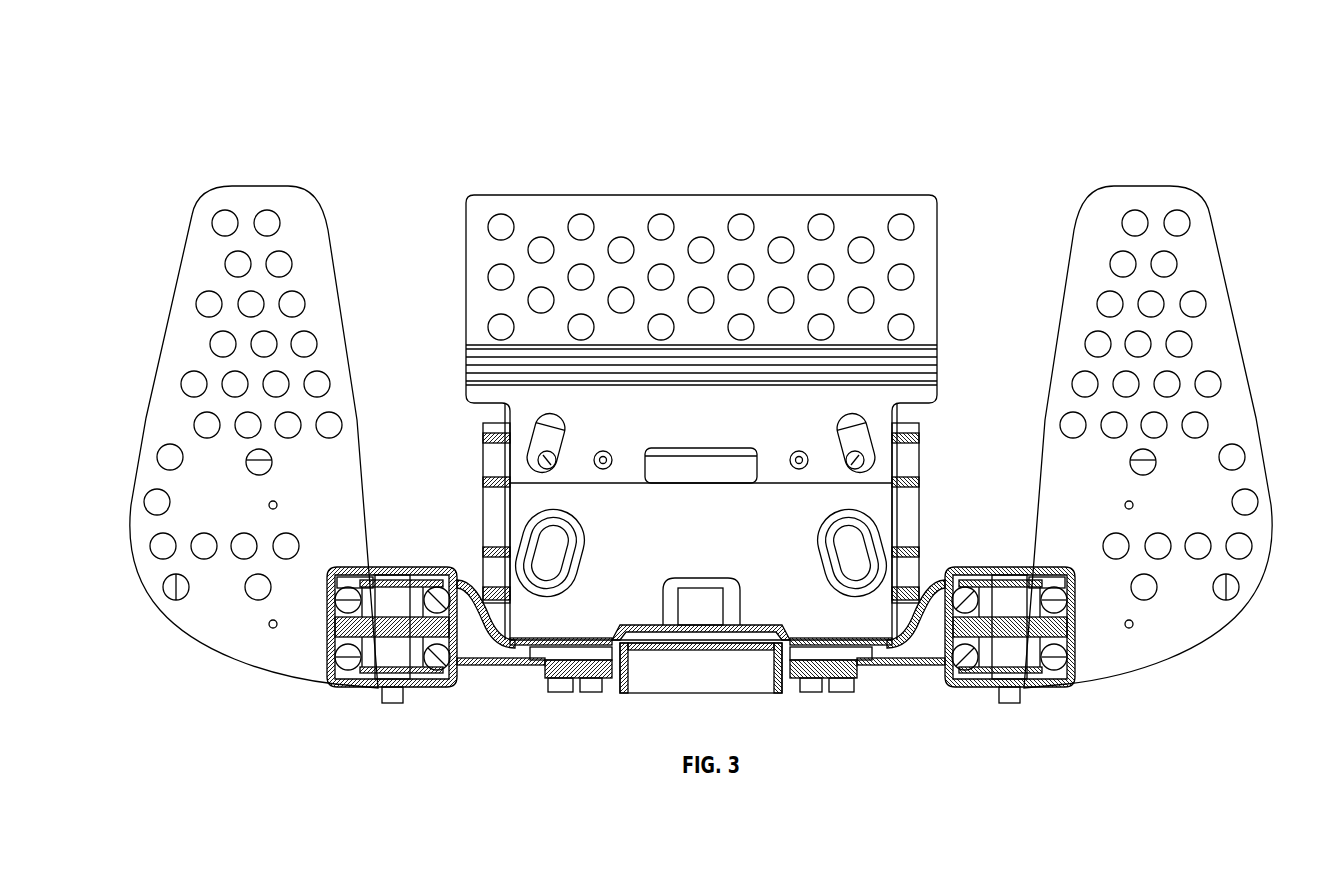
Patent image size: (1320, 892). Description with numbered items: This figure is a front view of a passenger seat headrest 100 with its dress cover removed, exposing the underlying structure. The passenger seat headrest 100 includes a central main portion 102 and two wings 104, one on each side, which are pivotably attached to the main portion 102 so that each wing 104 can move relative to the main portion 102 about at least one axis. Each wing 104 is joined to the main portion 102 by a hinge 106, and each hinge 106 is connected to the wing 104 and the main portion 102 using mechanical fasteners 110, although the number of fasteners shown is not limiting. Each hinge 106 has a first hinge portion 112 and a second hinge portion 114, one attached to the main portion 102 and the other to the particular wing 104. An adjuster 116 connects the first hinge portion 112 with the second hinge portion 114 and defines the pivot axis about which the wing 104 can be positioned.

The passenger seat headrest 100 is at (457, 145).
The main portion 102 is at (868, 222).
The wing 104 is at (308, 228).
The hinge 106 is at (364, 672).
The mechanical fastener 110 is at (437, 597).
The first hinge portion 112 is at (348, 582).
The second hinge portion 114 is at (452, 672).
The adjuster 116 is at (392, 690).